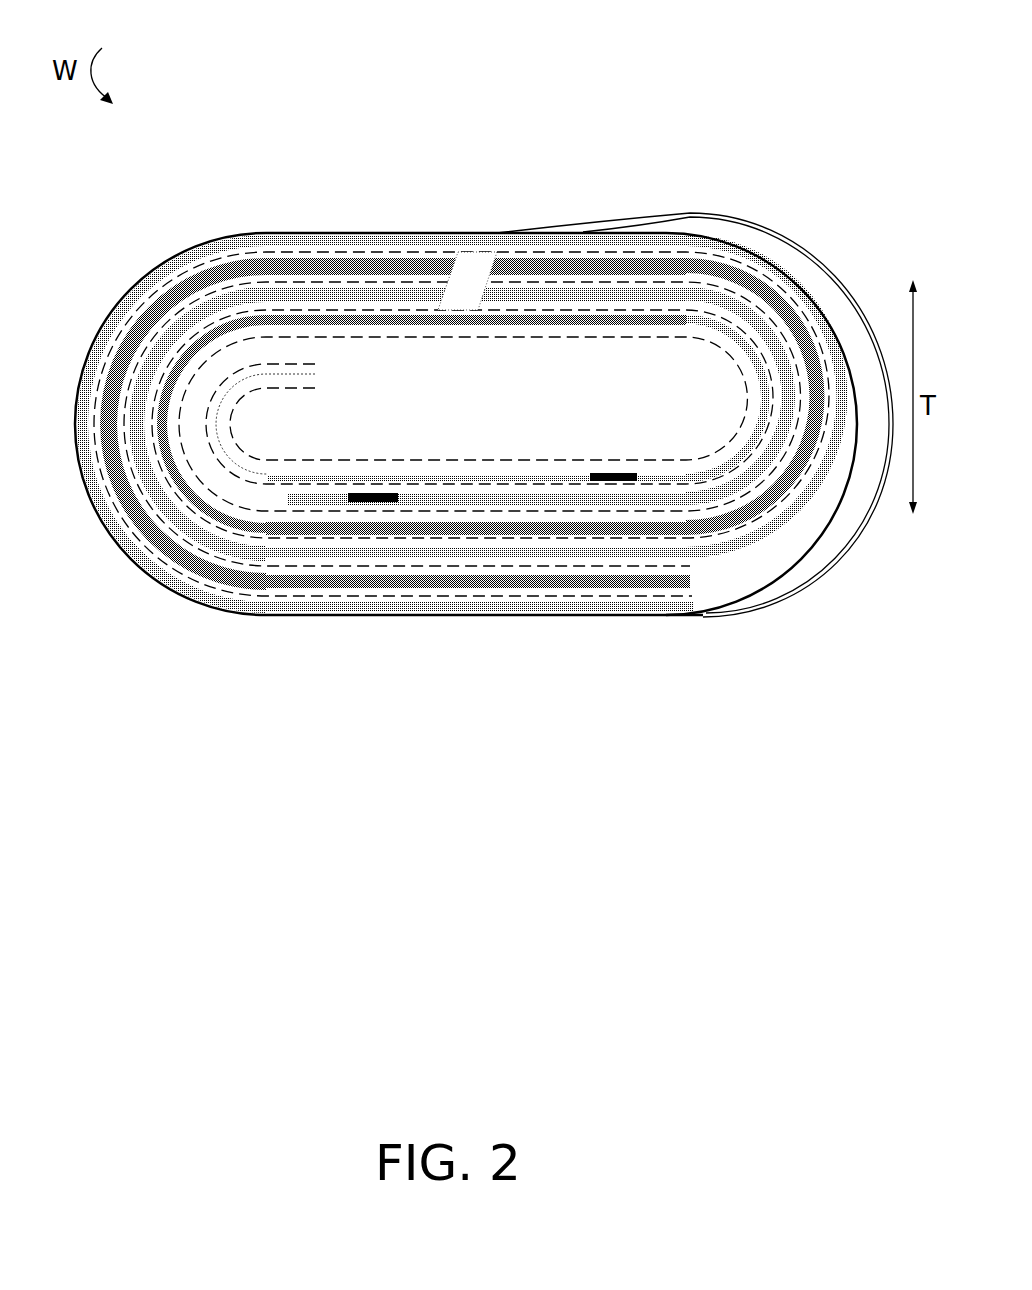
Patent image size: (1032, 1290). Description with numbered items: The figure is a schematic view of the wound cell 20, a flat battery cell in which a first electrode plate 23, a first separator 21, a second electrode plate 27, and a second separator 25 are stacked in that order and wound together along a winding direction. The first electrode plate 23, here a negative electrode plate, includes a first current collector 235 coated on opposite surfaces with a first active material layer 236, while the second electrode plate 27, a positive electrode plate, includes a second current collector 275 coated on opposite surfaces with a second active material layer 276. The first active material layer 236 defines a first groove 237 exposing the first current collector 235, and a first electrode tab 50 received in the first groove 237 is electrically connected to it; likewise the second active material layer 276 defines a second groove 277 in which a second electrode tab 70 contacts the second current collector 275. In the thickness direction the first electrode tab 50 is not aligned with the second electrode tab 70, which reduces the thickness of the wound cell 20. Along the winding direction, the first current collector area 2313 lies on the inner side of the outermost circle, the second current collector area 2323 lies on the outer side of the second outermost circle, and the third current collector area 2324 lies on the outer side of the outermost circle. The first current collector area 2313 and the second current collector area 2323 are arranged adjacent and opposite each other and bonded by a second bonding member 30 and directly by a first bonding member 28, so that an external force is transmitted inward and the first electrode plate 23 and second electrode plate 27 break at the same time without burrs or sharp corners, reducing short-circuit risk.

The wound cell 20 is at (420, 27).
The first separator 21 is at (170, 477).
The first electrode plate 23 is at (214, 672).
The second separator 25 is at (177, 433).
The second electrode plate 27 is at (130, 215).
The first bonding member 28 is at (823, 272).
The second bonding member 30 is at (718, 614).
The first electrode tab 50 is at (357, 504).
The second electrode tab 70 is at (612, 474).
The first current collector 235 is at (170, 508).
The first active material layer 236 is at (230, 553).
The first groove 237 is at (392, 506).
The second current collector 275 is at (170, 393).
The second active material layer 276 is at (192, 345).
The second groove 277 is at (595, 477).
The first current collector area 2313 is at (860, 528).
The second current collector area 2323 is at (753, 543).
The third current collector area 2324 is at (600, 614).